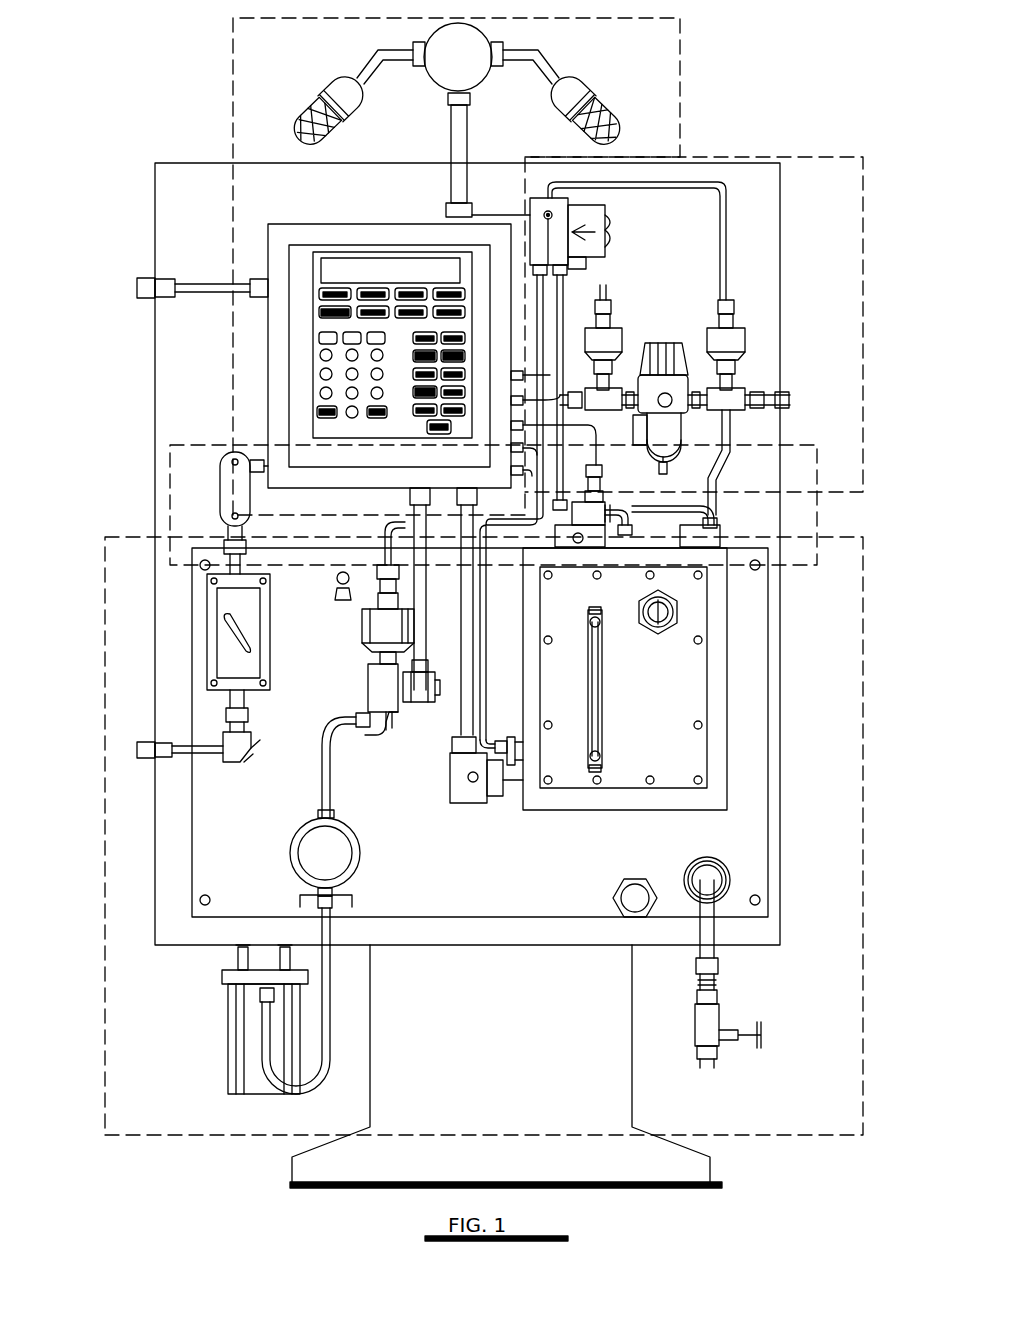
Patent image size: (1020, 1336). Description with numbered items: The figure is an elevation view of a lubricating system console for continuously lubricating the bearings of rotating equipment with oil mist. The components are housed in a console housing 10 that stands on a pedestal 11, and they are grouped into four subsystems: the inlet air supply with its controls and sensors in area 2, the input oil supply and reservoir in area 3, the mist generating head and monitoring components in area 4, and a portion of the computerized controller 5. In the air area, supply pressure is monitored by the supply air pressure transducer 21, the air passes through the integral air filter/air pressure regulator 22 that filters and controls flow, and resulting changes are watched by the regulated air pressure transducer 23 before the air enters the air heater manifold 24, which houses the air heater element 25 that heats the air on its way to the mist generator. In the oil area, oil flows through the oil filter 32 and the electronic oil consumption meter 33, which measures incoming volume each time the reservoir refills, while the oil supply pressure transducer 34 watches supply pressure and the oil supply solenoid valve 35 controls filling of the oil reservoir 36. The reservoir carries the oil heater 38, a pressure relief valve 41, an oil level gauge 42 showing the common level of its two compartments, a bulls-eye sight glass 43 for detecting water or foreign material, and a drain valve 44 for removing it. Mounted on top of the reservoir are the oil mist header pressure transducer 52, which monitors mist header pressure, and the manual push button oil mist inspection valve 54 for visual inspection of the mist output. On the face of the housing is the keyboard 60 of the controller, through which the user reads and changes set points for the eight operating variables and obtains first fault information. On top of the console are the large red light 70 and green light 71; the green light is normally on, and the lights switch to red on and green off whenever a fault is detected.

The inlet air supply subsystem 2 is at (748, 157).
The input oil supply and reservoir subsystem 3 is at (872, 1010).
The mist generating head and monitoring subsystem 4 is at (817, 510).
The computerized controller 5 is at (232, 130).
The console housing 10 is at (150, 485).
The pedestal 11 is at (578, 1128).
The supply air pressure transducer 21 is at (740, 340).
The air filter/air pressure regulator 22 is at (662, 445).
The regulated air pressure transducer 23 is at (615, 335).
The air heater manifold 24 is at (536, 215).
The air heater element 25 is at (597, 238).
The oil filter 32 is at (252, 1062).
The electronic oil consumption meter 33 is at (340, 866).
The oil supply pressure transducer 34 is at (380, 624).
The oil supply solenoid valve 35 is at (425, 703).
The oil reservoir 36 is at (480, 732).
The oil heater 38 is at (463, 790).
The pressure relief valve 41 is at (672, 610).
The oil level gauge 42 is at (604, 722).
The bulls-eye sight glass 43 is at (633, 890).
The drain valve 44 is at (692, 1042).
The oil mist header pressure transducer 52 is at (590, 530).
The oil mist inspection valve 54 is at (338, 580).
The keyboard 60 is at (300, 348).
The red light 70 is at (590, 88).
The green light 71 is at (325, 85).